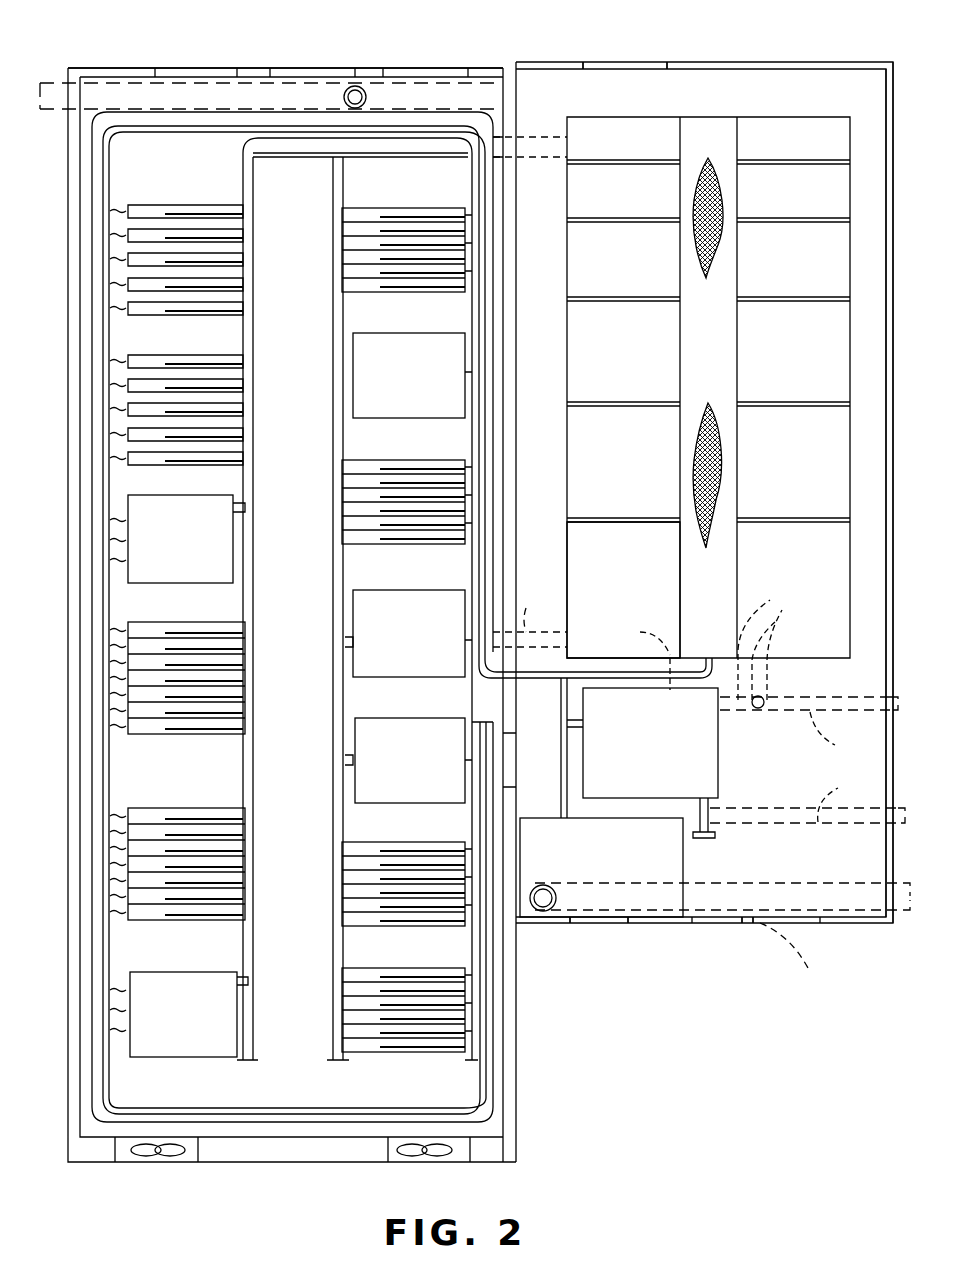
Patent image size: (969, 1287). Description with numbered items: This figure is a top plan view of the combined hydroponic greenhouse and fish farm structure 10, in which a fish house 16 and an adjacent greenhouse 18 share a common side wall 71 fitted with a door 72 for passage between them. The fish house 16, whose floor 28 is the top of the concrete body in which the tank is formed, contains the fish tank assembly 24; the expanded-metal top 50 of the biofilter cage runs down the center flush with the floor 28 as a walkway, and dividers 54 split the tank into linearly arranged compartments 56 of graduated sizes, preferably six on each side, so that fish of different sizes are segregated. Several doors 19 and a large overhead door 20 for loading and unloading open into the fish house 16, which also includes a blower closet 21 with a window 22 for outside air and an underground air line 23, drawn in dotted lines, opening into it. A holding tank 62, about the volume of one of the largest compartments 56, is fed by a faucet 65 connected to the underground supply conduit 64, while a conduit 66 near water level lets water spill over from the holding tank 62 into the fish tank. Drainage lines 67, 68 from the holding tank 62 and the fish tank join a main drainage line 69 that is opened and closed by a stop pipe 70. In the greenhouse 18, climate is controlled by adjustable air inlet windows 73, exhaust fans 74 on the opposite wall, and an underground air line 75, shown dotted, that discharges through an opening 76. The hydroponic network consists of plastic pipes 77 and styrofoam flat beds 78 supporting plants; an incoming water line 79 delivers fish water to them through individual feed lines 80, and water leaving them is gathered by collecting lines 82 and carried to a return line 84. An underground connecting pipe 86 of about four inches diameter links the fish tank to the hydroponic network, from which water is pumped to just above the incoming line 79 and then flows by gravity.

The structure 10 is at (568, 1020).
The fish house 16 is at (775, 62).
The greenhouse 18 is at (368, 68).
The doors 19 is at (633, 68).
The overhead door 20 is at (830, 925).
The closet 21 is at (665, 872).
The window 22 is at (598, 925).
The underground air line 23 is at (796, 953).
The fish tank assembly 24 is at (624, 112).
The floor 28 is at (818, 95).
The top 50 is at (703, 135).
The divider 54 is at (590, 402).
The compartments 56 is at (598, 582).
The holding tank 62 is at (705, 790).
The conduit 64 is at (807, 798).
The faucet 65 is at (710, 822).
The conduit 66 is at (638, 655).
The tank drainage line 67 is at (772, 638).
The tank drainage line 68 is at (777, 654).
The main drainage line 69 is at (809, 725).
The stop pipe 70 is at (758, 710).
The side wall 71 is at (510, 82).
The door 72 is at (510, 772).
The air inlet windows 73 is at (192, 70).
The exhaust fans 74 is at (192, 1152).
The underground air line 75 is at (133, 100).
The opening 76 is at (364, 97).
The plastic pipes 77 is at (362, 978).
The flat beds 78 is at (366, 788).
The incoming water line 79 is at (477, 441).
The feed lines 80 is at (118, 968).
The collecting lines 82 is at (345, 635).
The return line 84 is at (312, 352).
The connecting pipe 86 is at (530, 392).